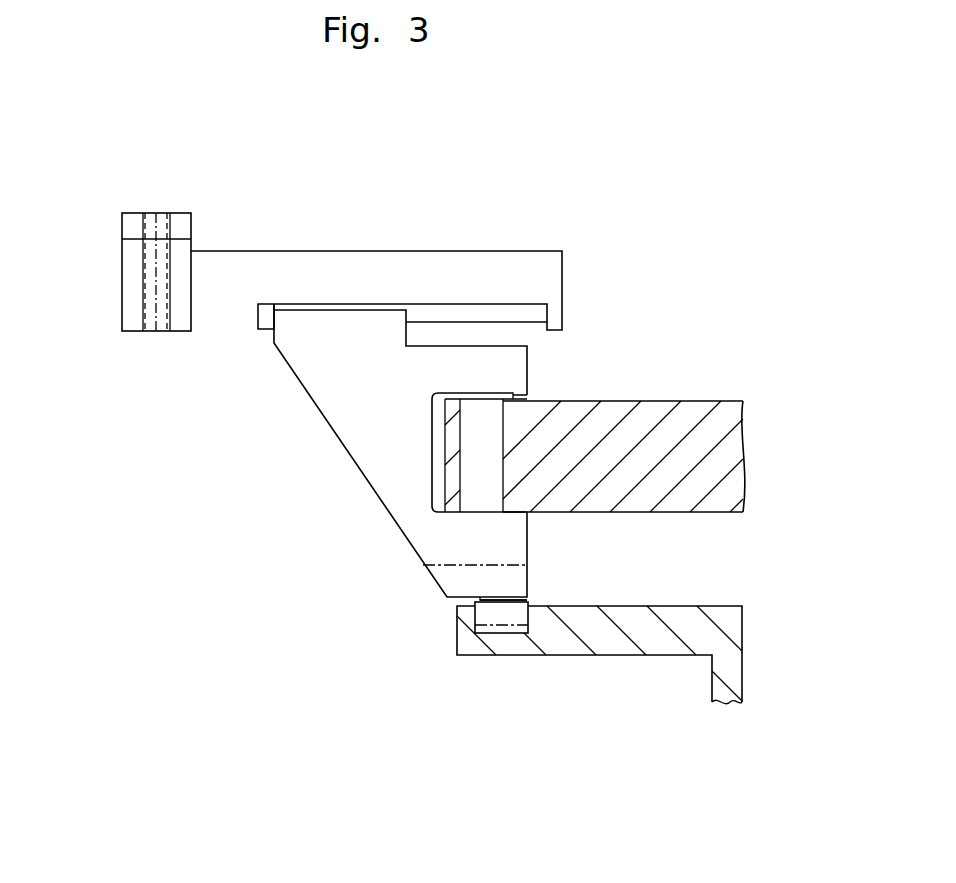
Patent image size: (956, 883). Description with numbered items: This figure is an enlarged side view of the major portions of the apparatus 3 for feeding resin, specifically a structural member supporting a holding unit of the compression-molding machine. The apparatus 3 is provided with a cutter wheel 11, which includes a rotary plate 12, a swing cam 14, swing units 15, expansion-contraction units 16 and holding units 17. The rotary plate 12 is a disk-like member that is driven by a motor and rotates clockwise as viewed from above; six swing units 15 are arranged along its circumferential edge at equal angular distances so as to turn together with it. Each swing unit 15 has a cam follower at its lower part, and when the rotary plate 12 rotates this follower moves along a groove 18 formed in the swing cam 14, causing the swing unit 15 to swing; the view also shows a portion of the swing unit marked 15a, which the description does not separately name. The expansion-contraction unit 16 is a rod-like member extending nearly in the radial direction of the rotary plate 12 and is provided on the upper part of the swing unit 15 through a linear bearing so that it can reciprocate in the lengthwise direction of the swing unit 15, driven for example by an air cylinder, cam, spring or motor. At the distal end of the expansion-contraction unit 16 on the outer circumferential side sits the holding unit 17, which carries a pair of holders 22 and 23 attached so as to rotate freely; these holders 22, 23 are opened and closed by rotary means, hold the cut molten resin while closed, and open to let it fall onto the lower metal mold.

The apparatus for feeding resin 3 is at (728, 142).
The cutter wheel 11 is at (692, 401).
The rotary plate 12 is at (717, 461).
The swing cam 14 is at (612, 656).
The swing unit 15 is at (527, 368).
The projection 15a is at (503, 612).
The expansion-contraction unit 16 is at (483, 251).
The holding unit 17 is at (192, 227).
The groove 18 is at (530, 622).
The holder 22 is at (127, 293).
The holder 23 is at (182, 315).